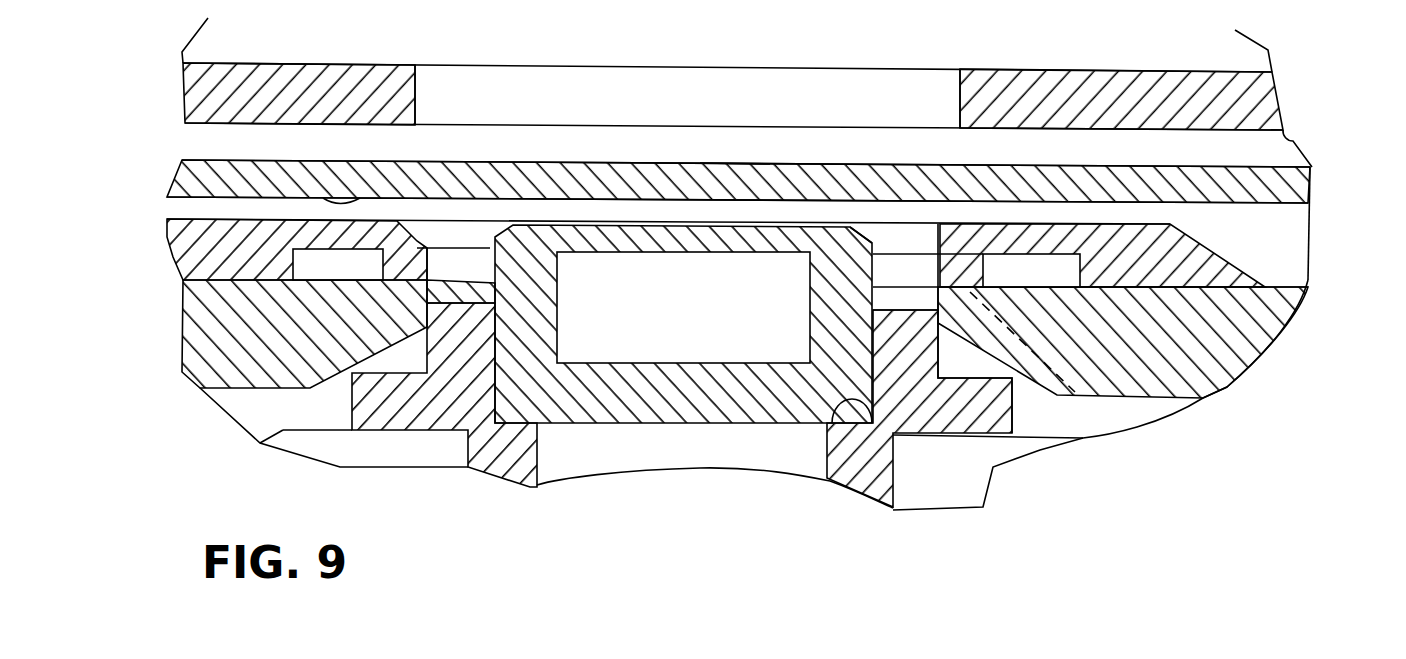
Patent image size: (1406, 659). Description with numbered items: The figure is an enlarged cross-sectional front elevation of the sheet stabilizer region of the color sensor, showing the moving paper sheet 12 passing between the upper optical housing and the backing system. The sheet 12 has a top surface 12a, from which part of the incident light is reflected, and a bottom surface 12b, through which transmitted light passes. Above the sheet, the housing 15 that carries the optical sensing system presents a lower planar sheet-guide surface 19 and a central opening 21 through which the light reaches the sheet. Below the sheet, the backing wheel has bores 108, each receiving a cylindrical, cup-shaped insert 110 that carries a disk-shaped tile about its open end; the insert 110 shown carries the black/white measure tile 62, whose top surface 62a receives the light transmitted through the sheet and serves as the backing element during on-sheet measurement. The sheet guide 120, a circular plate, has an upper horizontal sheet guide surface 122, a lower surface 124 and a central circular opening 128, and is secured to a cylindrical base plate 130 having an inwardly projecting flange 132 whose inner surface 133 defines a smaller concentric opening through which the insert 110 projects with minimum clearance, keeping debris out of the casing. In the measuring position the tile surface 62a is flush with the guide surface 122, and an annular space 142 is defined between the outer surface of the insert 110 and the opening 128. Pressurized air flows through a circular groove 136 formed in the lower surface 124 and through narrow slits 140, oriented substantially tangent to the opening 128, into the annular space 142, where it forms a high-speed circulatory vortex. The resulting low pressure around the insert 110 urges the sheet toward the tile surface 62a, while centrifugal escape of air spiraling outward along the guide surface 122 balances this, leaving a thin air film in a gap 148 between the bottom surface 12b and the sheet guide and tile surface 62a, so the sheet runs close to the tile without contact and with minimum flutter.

The sheet of material 12 is at (180, 170).
The top surface 12a is at (207, 160).
The bottom surface 12b is at (365, 197).
The housing 15 is at (983, 67).
The lower planar sheet-guide surface 19 is at (1297, 143).
The central opening 21 is at (953, 103).
The measure tile 62 is at (717, 252).
The top surface of tile 62a is at (727, 165).
The bores 108 is at (827, 478).
The insert 110 is at (627, 400).
The sheet guide 120 is at (1167, 233).
The upper horizontal sheet guide surface 122 is at (1110, 224).
The lower surface 124 is at (1093, 316).
The central circular opening 128 is at (935, 258).
The base plate 130 is at (1227, 387).
The flange 132 is at (900, 293).
The inner surface 133 is at (872, 285).
The circular groove 136 is at (1262, 345).
The slits 140 is at (1083, 390).
The annular space 142 is at (467, 262).
The gap 148 is at (210, 208).